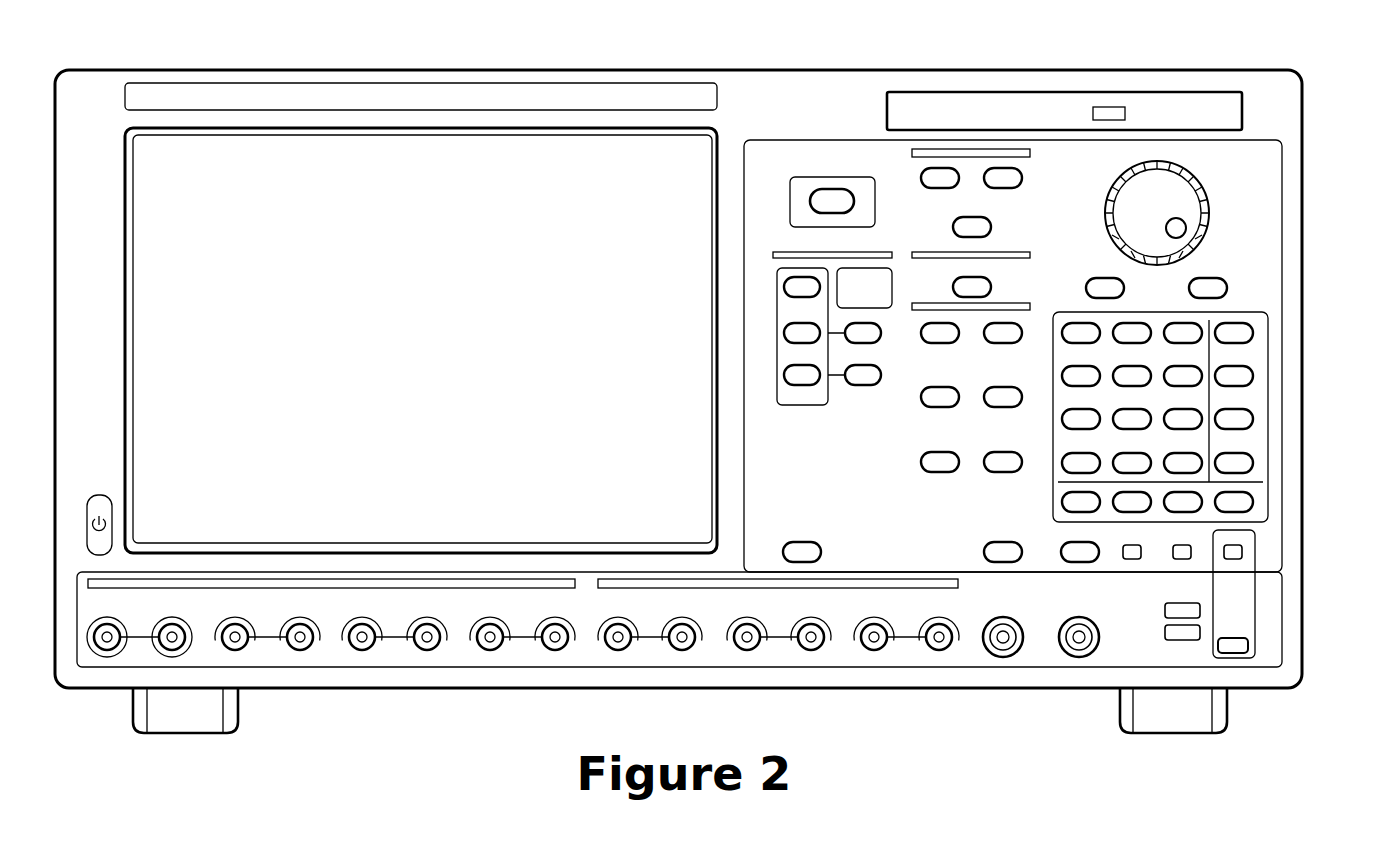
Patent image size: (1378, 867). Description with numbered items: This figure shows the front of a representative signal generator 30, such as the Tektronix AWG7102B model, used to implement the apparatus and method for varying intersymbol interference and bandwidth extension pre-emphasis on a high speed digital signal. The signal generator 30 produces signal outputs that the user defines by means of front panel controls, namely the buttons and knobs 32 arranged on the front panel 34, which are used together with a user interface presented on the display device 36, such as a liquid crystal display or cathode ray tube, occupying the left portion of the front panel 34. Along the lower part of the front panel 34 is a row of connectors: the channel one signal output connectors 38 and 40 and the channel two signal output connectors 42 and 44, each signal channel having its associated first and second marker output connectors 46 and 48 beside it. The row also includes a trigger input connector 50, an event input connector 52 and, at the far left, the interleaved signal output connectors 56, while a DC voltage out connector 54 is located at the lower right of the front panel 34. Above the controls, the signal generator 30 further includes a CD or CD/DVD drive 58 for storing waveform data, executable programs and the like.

The signal generator 30 is at (1303, 132).
The buttons and knobs 32 is at (1250, 441).
The front panel 34 is at (1273, 600).
The display device 36 is at (408, 326).
The CHANNEL 1 signal output connector 38 is at (237, 650).
The CHANNEL 1 signal output connector 40 is at (300, 650).
The CHANNEL 2 signal output connector 42 is at (618, 650).
The CHANNEL 2 signal output connector 44 is at (682, 650).
The M1 marker output connector 46 is at (362, 650).
The M2 marker output connector 48 is at (490, 650).
The trigger input connector 50 is at (1003, 657).
The event input connector 52 is at (1079, 657).
The DC voltage out connector 54 is at (1236, 653).
The interleaved signal output connectors 56 is at (107, 650).
The CD or CD/DVD drive 58 is at (1068, 92).